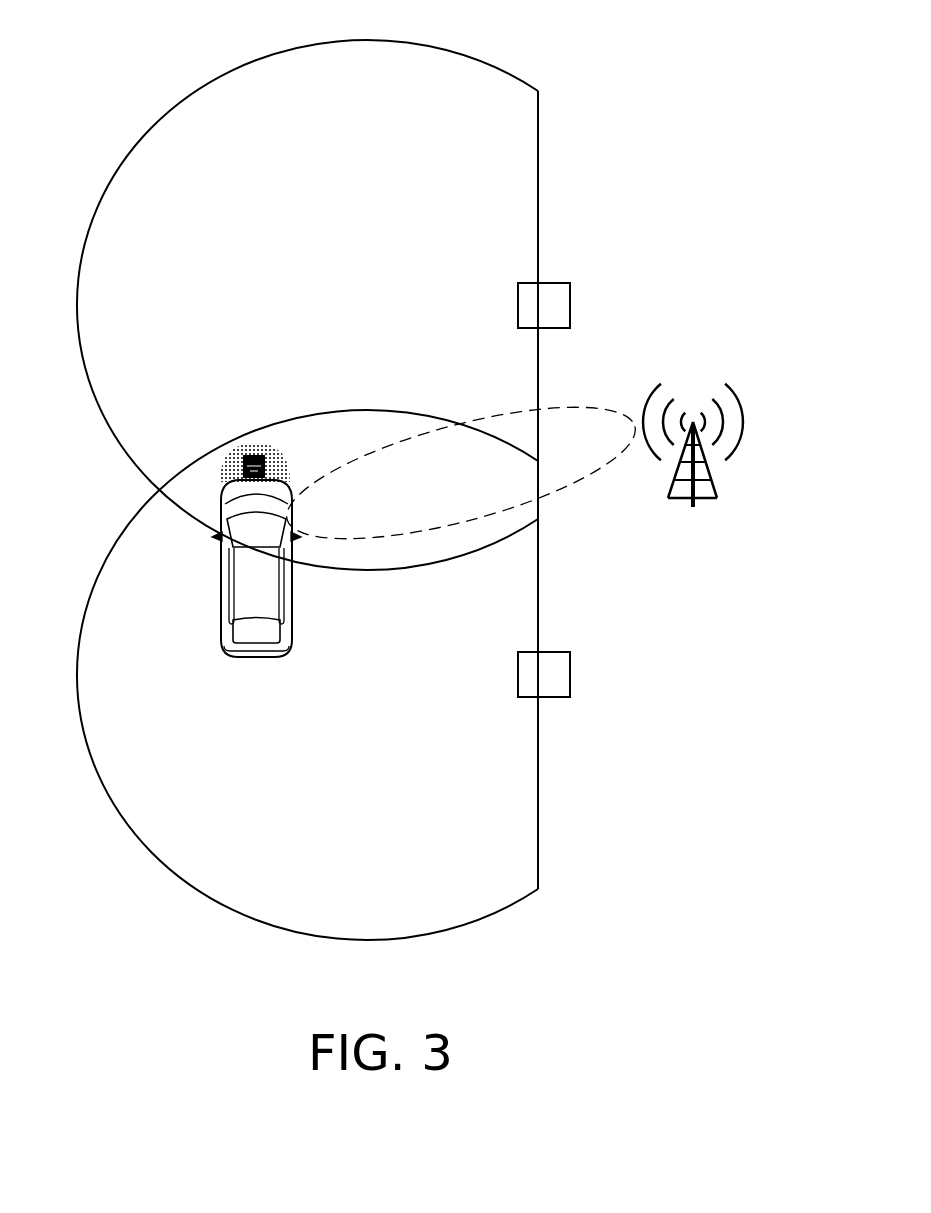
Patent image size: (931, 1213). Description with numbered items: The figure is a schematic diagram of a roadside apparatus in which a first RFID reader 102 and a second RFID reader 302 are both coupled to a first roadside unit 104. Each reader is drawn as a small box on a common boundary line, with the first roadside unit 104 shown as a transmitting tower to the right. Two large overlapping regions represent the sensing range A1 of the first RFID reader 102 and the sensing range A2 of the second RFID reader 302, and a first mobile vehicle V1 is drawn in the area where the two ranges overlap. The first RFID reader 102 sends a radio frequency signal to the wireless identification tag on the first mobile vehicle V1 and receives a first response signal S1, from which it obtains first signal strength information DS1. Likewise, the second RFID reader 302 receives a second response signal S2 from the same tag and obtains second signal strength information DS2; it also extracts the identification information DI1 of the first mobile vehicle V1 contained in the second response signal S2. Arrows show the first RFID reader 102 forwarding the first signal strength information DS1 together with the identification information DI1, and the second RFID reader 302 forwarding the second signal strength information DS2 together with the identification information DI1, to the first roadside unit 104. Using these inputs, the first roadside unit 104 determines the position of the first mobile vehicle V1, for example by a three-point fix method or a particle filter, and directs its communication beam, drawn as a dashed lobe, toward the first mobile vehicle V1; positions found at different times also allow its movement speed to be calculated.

The second RFID reader 302 is at (571, 282).
The first RFID reader 102 is at (557, 697).
The first roadside unit 104 is at (710, 505).
The first mobile vehicle V1 is at (253, 657).
The sensing range of the first RFID reader A1 is at (500, 885).
The sensing range of the second RFID reader A2 is at (500, 95).
The first response signal S1 is at (508, 677).
The second response signal S2 is at (310, 510).
The first signal strength information DS1 is at (653, 535).
The second signal strength information DS2 is at (637, 375).
The identification information of the first mobile vehicle DI1 is at (680, 475).